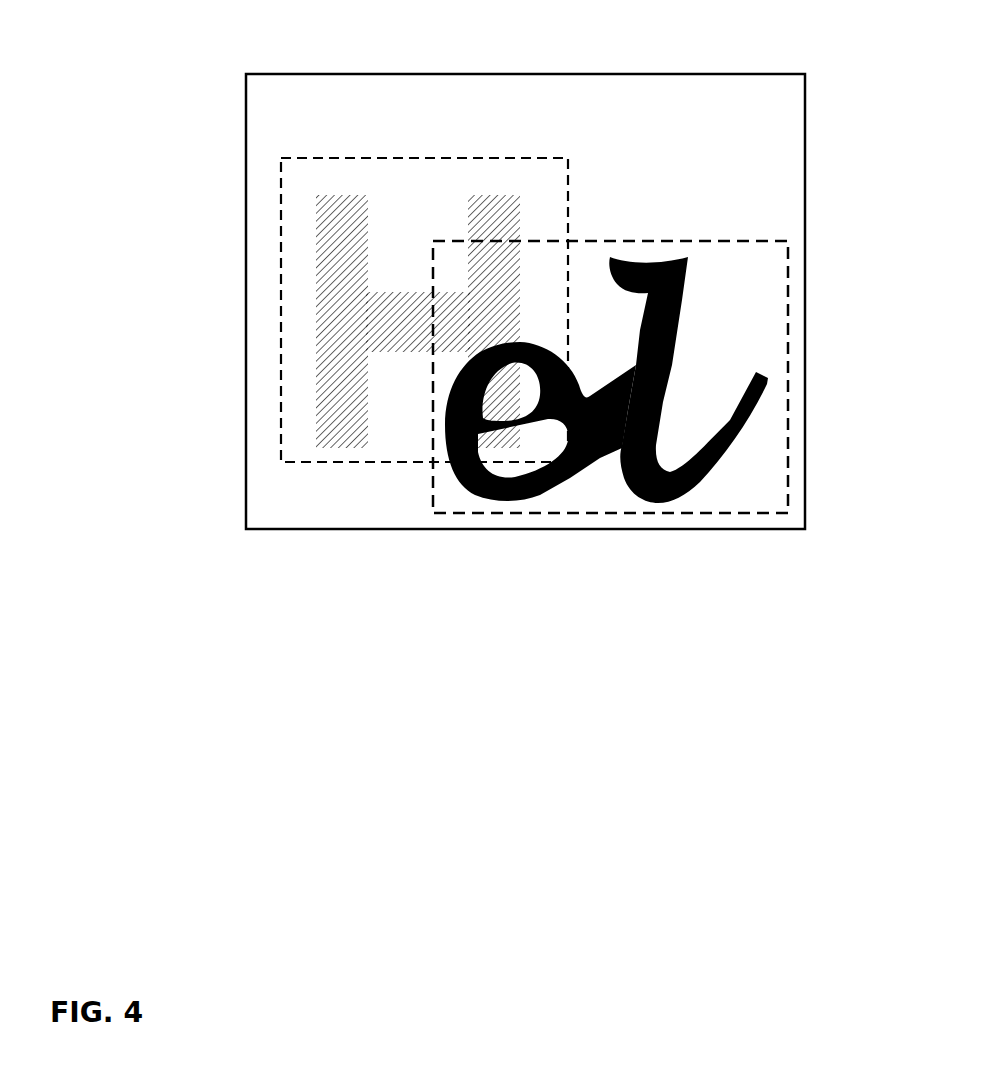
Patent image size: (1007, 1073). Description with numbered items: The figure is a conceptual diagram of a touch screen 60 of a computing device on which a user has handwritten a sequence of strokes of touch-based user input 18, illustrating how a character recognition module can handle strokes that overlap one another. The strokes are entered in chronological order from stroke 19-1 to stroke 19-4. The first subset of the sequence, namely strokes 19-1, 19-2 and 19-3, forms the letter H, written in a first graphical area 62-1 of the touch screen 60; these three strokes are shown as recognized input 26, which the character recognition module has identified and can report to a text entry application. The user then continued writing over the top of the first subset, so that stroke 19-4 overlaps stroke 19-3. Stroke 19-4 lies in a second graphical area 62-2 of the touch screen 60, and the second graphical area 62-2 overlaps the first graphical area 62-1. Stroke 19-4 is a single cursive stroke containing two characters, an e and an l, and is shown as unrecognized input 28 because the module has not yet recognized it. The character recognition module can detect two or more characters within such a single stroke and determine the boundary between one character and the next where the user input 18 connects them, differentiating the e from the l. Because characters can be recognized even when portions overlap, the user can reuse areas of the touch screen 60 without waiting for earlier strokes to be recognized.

The user input 18 is at (520, 375).
The stroke 19-1 is at (315, 210).
The stroke 19-2 is at (397, 312).
The stroke 19-3 is at (532, 191).
The stroke 19-4 is at (693, 312).
The recognized input 26 is at (357, 353).
The unrecognized input 28 is at (654, 343).
The touch screen 60 is at (537, 128).
The first graphical area 62-1 is at (279, 308).
The second graphical area 62-2 is at (606, 514).